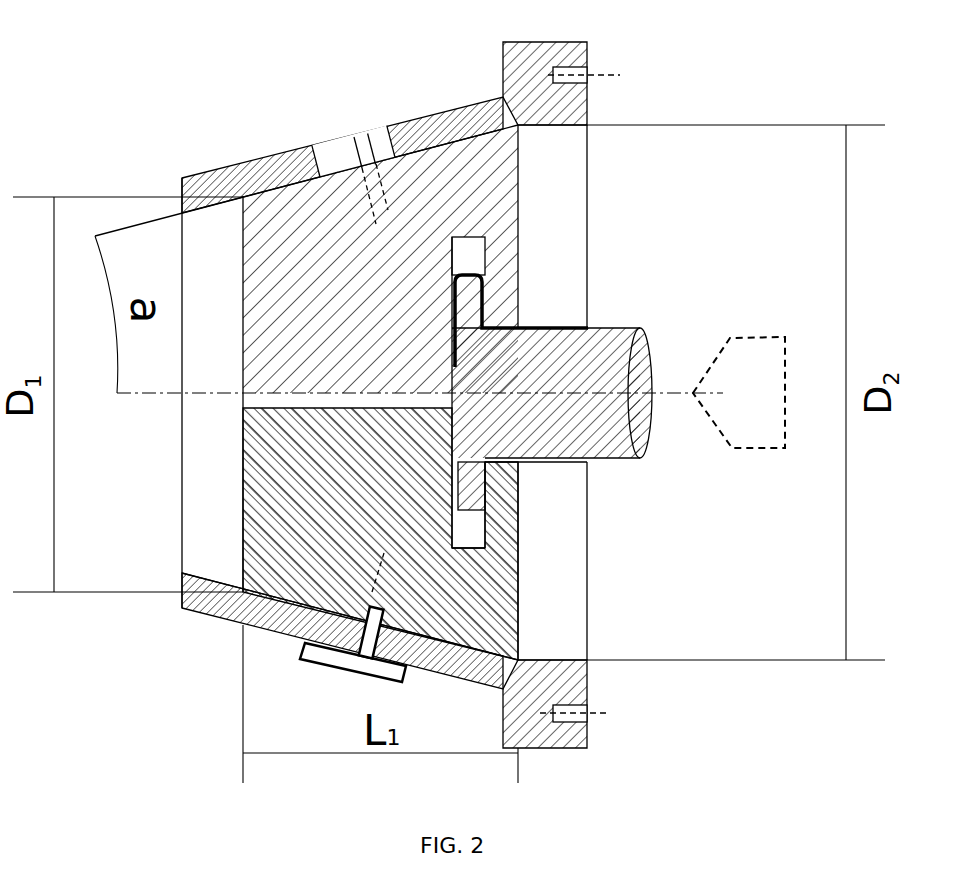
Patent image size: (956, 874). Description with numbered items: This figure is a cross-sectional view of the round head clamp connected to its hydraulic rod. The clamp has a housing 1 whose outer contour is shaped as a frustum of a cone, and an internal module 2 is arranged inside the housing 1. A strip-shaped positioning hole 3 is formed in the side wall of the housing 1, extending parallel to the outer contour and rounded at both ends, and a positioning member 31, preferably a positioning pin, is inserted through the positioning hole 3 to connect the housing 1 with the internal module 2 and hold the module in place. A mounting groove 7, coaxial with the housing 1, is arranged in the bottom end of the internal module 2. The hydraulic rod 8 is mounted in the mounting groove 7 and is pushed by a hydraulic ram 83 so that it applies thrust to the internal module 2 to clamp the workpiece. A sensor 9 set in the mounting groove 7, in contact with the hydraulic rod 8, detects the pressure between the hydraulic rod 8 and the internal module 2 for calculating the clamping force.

The housing 1 is at (587, 53).
The internal module 2 is at (487, 243).
The positioning hole 3 is at (358, 133).
The positioning member 31 is at (330, 657).
The mounting groove 7 is at (455, 527).
The hydraulic rod 8 is at (600, 447).
The hydraulic ram 83 is at (742, 353).
The sensor 9 is at (515, 308).